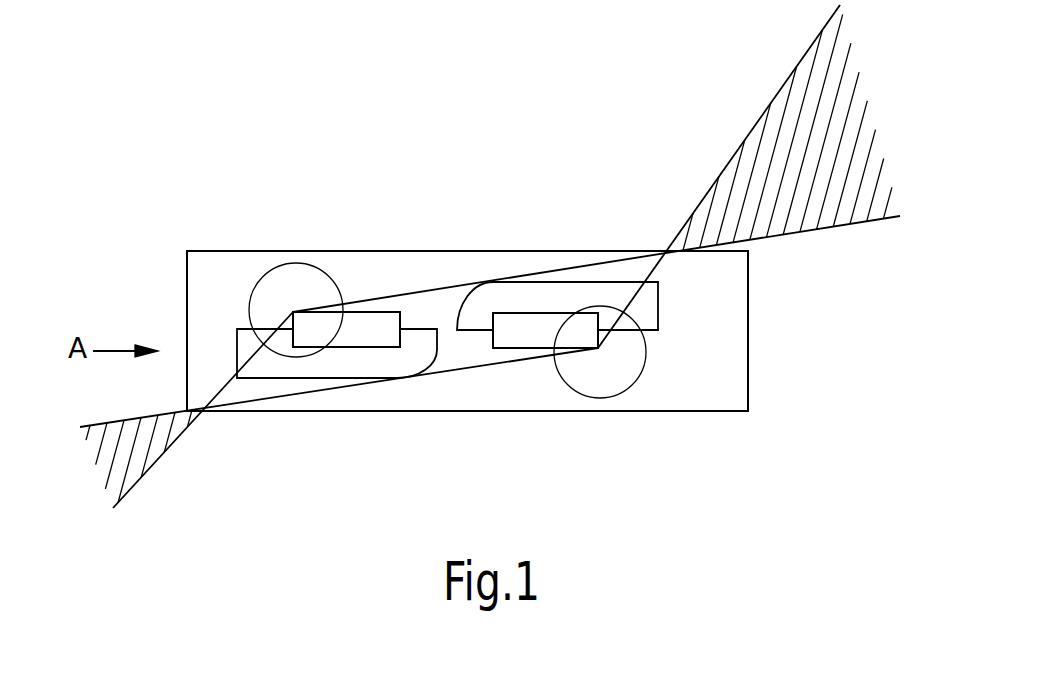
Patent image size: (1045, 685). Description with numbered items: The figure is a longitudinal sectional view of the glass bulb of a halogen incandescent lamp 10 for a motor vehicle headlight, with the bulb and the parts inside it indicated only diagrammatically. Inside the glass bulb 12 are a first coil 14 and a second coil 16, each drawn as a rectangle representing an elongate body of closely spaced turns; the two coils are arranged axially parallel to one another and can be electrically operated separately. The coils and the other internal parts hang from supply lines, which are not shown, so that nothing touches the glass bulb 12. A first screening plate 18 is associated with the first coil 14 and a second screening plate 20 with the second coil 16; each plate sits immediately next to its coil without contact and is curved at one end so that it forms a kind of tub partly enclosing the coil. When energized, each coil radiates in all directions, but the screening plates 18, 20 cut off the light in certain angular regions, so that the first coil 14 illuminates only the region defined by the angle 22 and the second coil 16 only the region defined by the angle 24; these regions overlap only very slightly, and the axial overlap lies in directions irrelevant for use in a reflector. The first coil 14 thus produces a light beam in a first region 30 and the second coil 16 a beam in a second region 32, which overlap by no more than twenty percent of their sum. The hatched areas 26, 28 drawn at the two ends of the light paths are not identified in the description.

The halogen incandescent lamp 10 is at (623, 225).
The glass bulb 12 is at (670, 413).
The first coil 14 is at (385, 312).
The second coil 16 is at (512, 350).
The first screening plate 18 is at (313, 380).
The second screening plate 20 is at (565, 282).
The angle 22 is at (260, 277).
The angle 24 is at (648, 354).
The incoming light beam 26 is at (143, 452).
The outgoing light beam 28 is at (779, 96).
The first region 30 is at (278, 103).
The second region 32 is at (607, 561).